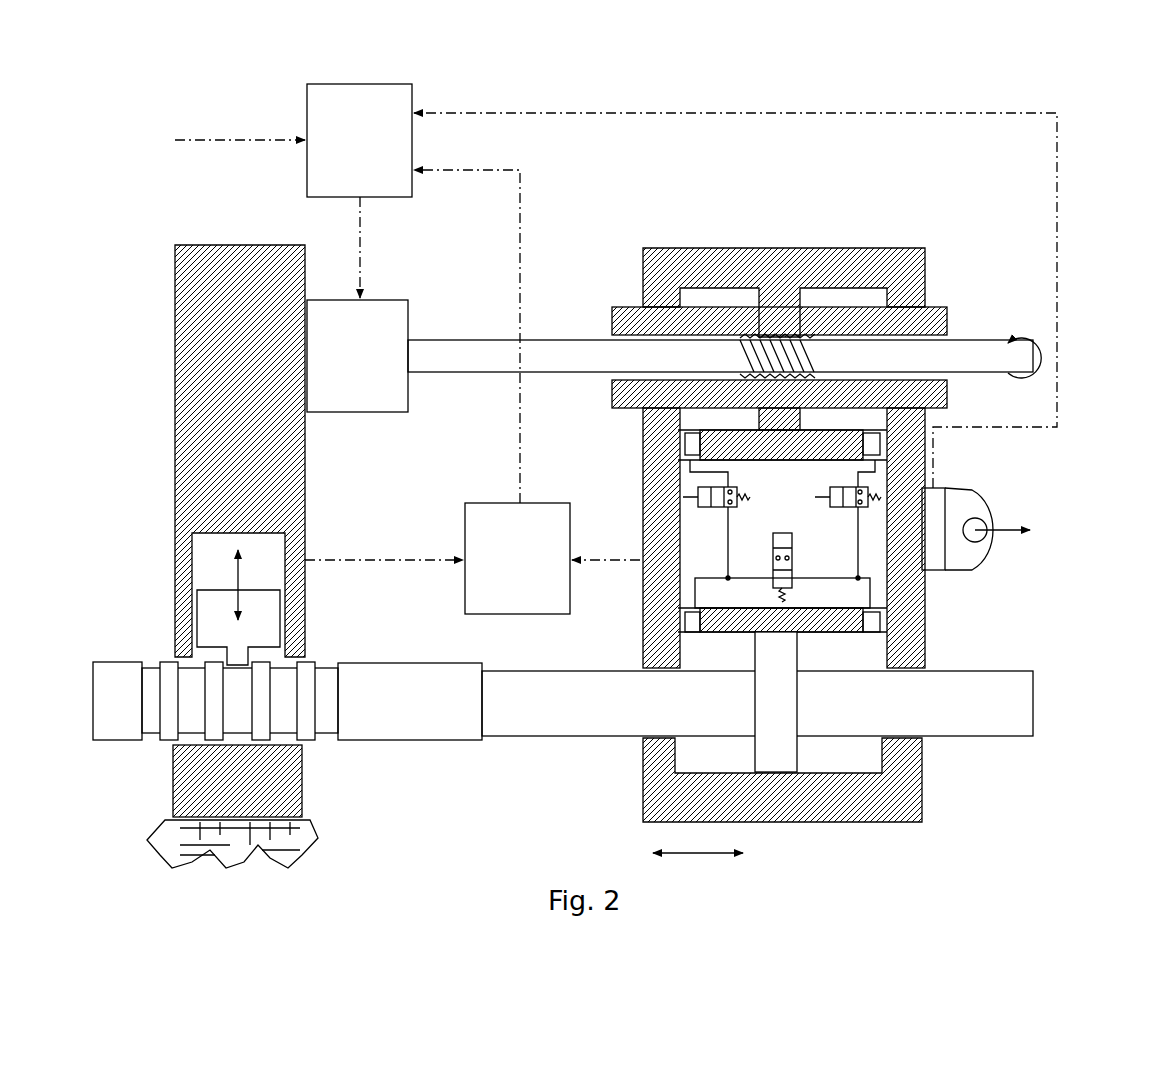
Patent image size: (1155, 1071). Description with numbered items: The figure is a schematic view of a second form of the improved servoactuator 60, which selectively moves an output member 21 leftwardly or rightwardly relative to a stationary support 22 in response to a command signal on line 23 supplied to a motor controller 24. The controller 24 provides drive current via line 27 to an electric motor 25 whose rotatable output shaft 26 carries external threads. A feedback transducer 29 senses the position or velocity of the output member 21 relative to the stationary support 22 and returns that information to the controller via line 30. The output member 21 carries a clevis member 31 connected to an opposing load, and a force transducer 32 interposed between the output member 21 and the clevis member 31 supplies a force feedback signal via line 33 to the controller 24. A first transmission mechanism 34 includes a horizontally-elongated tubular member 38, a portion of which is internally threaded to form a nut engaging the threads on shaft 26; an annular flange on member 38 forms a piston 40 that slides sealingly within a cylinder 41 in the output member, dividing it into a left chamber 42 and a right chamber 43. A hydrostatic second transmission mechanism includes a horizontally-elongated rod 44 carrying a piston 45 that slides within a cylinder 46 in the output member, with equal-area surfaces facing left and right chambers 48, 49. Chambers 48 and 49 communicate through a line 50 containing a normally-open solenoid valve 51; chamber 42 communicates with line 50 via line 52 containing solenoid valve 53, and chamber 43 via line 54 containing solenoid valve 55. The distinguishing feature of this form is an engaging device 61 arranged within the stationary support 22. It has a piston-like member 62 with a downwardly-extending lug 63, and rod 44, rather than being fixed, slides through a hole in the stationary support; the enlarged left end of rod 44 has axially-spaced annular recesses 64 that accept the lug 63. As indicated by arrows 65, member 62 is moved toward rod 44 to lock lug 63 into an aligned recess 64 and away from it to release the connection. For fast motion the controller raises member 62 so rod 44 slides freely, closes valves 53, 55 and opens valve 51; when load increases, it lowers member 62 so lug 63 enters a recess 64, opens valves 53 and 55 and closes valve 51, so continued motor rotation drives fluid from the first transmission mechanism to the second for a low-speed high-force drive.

The output member 21 is at (927, 250).
The stationary support 22 is at (178, 242).
The command signal line 23 is at (236, 145).
The motor controller 24 is at (413, 84).
The electric motor 25 is at (410, 300).
The motor output shaft 26 is at (508, 374).
The drive current line 27 is at (362, 240).
The feedback transducer 29 is at (463, 502).
The feedback signal line 30 is at (522, 198).
The clevis member 31 is at (978, 500).
The force transducer 32 is at (933, 574).
The force feedback signal line 33 is at (1060, 197).
The first transmission mechanism 34 is at (950, 303).
The tubular member 38 is at (620, 306).
The piston 40 is at (777, 292).
The cylinder 41 is at (789, 270).
The left chamber 42 is at (718, 288).
The right chamber 43 is at (840, 296).
The rod 44 is at (550, 737).
The piston 45 is at (766, 774).
The cylinder 46 is at (812, 800).
The left chamber 48 is at (730, 766).
The right chamber 49 is at (852, 766).
The line 50 is at (818, 590).
The solenoid valve 51 is at (803, 516).
The line 52 is at (718, 546).
The solenoid valve 53 is at (700, 486).
The line 54 is at (852, 524).
The solenoid valve 55 is at (924, 463).
The servoactuator 60 is at (775, 82).
The engaging device 61 is at (197, 577).
The piston-like member 62 is at (272, 610).
The lug 63 is at (245, 668).
The annular recesses 64 is at (190, 746).
The arrows 65 is at (243, 565).